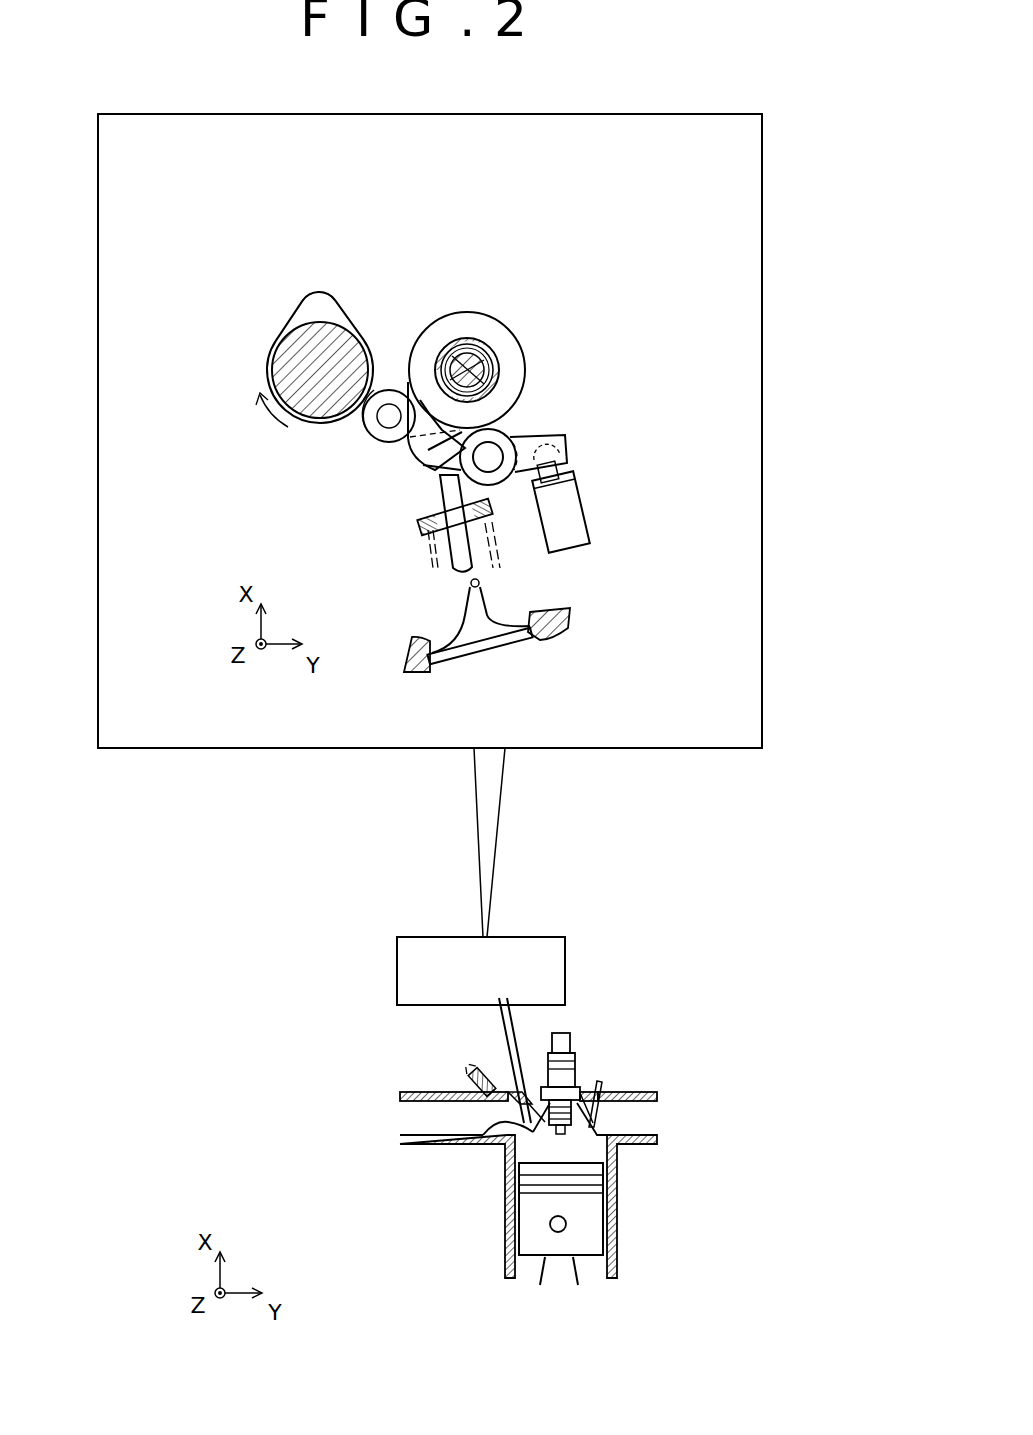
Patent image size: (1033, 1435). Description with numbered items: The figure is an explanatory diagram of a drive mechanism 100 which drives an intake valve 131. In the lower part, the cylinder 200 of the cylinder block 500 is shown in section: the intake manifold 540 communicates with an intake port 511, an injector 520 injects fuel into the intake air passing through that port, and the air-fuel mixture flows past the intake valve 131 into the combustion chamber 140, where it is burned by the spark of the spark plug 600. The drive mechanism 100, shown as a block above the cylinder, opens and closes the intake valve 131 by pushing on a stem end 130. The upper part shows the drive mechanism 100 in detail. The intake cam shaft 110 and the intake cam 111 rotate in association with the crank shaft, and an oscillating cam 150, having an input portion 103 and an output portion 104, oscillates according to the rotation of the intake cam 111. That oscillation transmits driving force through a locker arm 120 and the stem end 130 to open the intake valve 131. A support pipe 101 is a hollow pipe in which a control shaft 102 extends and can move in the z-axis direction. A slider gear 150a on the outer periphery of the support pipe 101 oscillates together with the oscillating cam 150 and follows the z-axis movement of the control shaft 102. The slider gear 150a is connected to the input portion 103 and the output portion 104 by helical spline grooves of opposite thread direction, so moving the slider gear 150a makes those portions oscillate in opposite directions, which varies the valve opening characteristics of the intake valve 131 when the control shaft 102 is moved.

The drive mechanism 100 is at (554, 270).
The support pipe 101 is at (451, 349).
The control shaft 102 is at (505, 380).
The input portion 103 is at (381, 458).
The output portion 104 is at (427, 463).
The intake cam shaft 110 is at (303, 302).
The intake cam 111 is at (318, 293).
The locker arm 120 is at (537, 437).
The stem end 130 is at (436, 552).
The intake valve 131 is at (500, 626).
The combustion chamber 140 is at (531, 657).
The oscillating cam 150 is at (477, 316).
The slider gear 150a is at (497, 353).
The cylinder 200 is at (230, 543).
The cylinder block 500 is at (615, 1093).
The intake port 511 is at (465, 1118).
The injector 520 is at (478, 1073).
The intake manifold 540 is at (437, 1145).
The spark plug 600 is at (588, 1065).